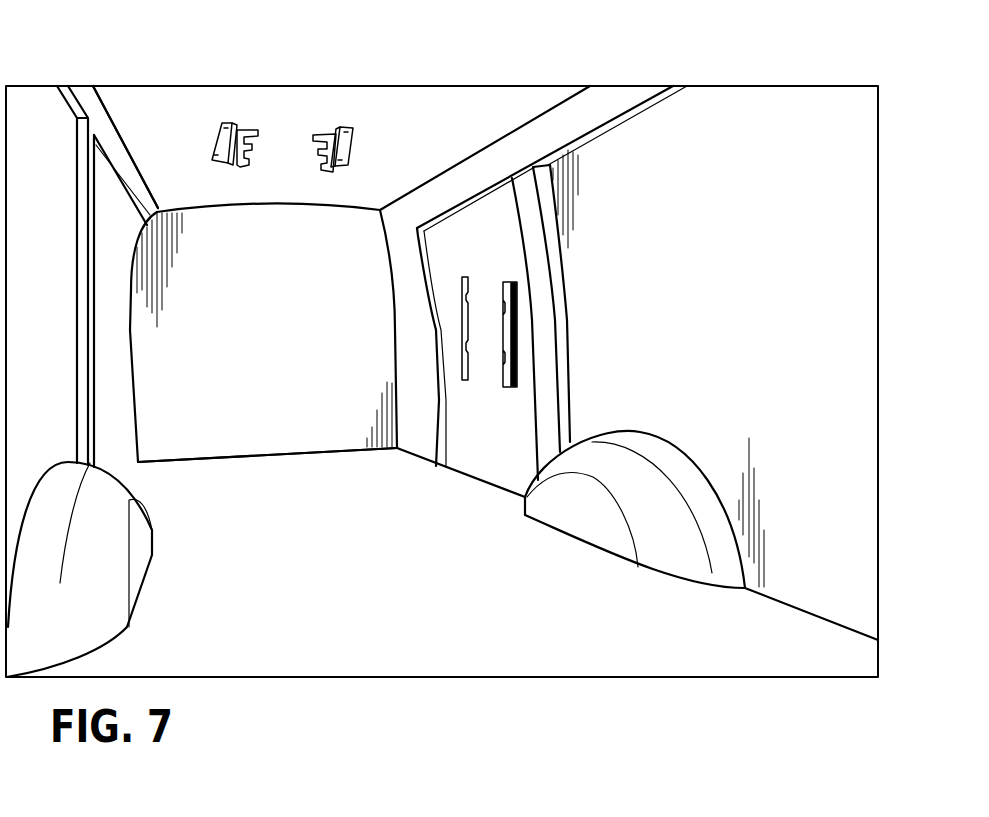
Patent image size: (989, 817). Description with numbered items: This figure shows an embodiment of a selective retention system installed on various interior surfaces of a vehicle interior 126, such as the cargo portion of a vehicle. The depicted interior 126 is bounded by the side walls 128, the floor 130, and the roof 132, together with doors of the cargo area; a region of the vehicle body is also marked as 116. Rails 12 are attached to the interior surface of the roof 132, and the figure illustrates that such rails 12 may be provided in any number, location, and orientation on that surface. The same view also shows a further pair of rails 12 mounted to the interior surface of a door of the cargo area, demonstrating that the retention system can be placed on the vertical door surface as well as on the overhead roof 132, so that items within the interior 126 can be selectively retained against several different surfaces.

The rails 12 is at (310, 170).
The vehicle cargo area side wall 116 is at (748, 103).
The vehicle interior 126 is at (437, 103).
The side walls 128 is at (739, 312).
The floor 130 is at (346, 556).
The roof 132 is at (158, 102).